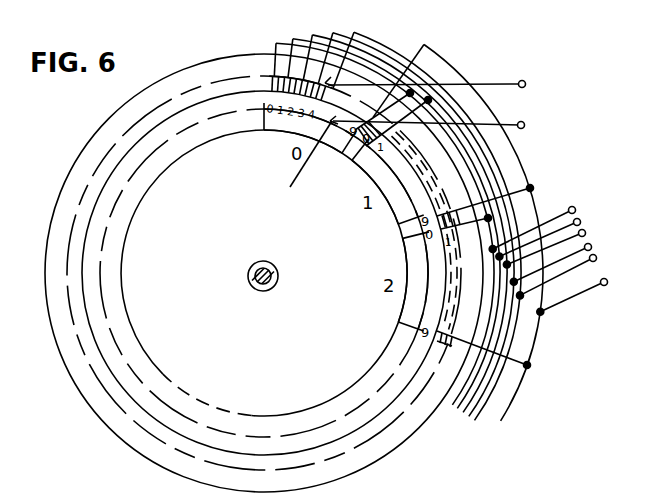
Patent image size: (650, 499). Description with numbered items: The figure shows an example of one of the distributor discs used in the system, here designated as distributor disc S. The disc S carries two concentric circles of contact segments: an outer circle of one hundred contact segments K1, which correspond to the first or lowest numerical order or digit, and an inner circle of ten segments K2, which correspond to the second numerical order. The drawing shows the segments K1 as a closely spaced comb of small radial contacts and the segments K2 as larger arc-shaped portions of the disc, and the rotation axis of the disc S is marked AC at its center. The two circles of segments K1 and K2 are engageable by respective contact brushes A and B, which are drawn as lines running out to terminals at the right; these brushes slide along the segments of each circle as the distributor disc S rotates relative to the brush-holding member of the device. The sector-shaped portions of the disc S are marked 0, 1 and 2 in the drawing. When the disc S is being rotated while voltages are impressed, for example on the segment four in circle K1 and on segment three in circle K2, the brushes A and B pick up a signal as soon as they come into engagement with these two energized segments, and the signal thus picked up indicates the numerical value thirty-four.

The contact segments K1 is at (272, 83).
The segments K2 is at (366, 168).
The contact brush A is at (511, 83).
The contact brush B is at (505, 124).
The distributor disc S is at (47, 257).
The axis of rotation AC is at (267, 270).
The segment 0 is at (310, 128).
The segment 1 is at (388, 181).
The segment 2 is at (413, 281).